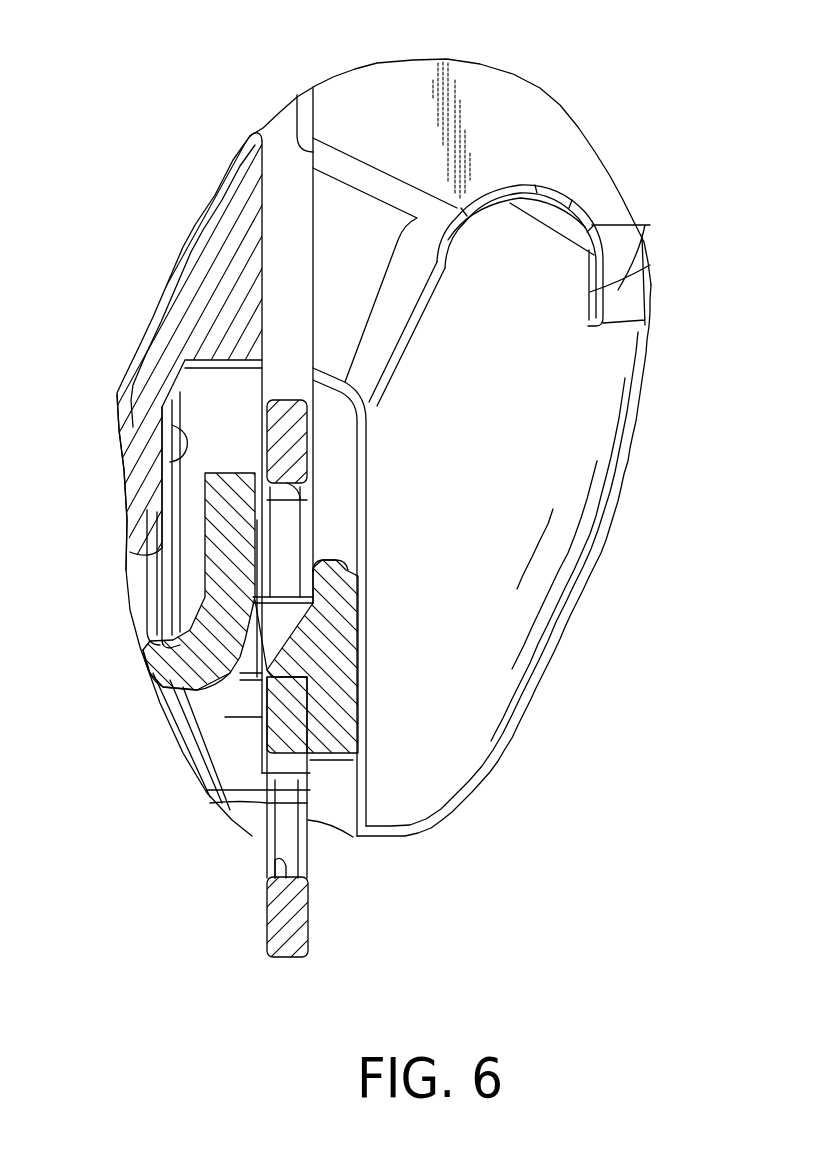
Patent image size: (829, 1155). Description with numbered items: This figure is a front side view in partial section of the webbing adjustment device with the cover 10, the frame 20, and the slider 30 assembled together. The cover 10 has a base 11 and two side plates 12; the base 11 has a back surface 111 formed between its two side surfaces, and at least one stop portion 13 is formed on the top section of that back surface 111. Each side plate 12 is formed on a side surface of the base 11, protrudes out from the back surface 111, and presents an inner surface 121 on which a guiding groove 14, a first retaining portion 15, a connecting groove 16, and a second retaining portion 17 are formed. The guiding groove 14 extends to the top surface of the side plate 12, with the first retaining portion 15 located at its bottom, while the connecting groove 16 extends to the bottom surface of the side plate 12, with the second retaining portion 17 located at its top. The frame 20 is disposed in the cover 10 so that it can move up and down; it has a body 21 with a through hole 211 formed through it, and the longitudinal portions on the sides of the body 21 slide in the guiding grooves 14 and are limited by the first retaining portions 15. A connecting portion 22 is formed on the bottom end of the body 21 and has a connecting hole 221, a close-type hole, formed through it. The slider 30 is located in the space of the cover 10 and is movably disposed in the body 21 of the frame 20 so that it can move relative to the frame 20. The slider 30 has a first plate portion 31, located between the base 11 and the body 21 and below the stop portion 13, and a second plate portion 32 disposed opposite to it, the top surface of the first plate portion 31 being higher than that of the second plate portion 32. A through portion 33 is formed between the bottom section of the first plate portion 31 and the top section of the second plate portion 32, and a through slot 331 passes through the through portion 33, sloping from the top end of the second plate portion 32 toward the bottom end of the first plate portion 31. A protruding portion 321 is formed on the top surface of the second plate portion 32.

The cover 10 is at (176, 192).
The base 11 is at (160, 342).
The back surface 111 is at (162, 452).
The side plate 12 is at (638, 410).
The inner surface 121 is at (408, 137).
The stop portion 13 is at (238, 345).
The guiding groove 14 is at (297, 95).
The first retaining portion 15 is at (260, 785).
The connecting groove 16 is at (548, 400).
The second retaining portion 17 is at (523, 177).
The frame 20 is at (316, 418).
The body 21 is at (300, 460).
The through hole 211 is at (300, 516).
The connecting portion 22 is at (285, 915).
The connecting hole 221 is at (275, 860).
The slider 30 is at (195, 580).
The first plate portion 31 is at (220, 508).
The second plate portion 32 is at (333, 645).
The protruding portion 321 is at (327, 576).
The through portion 33 is at (258, 705).
The through slot 331 is at (243, 688).